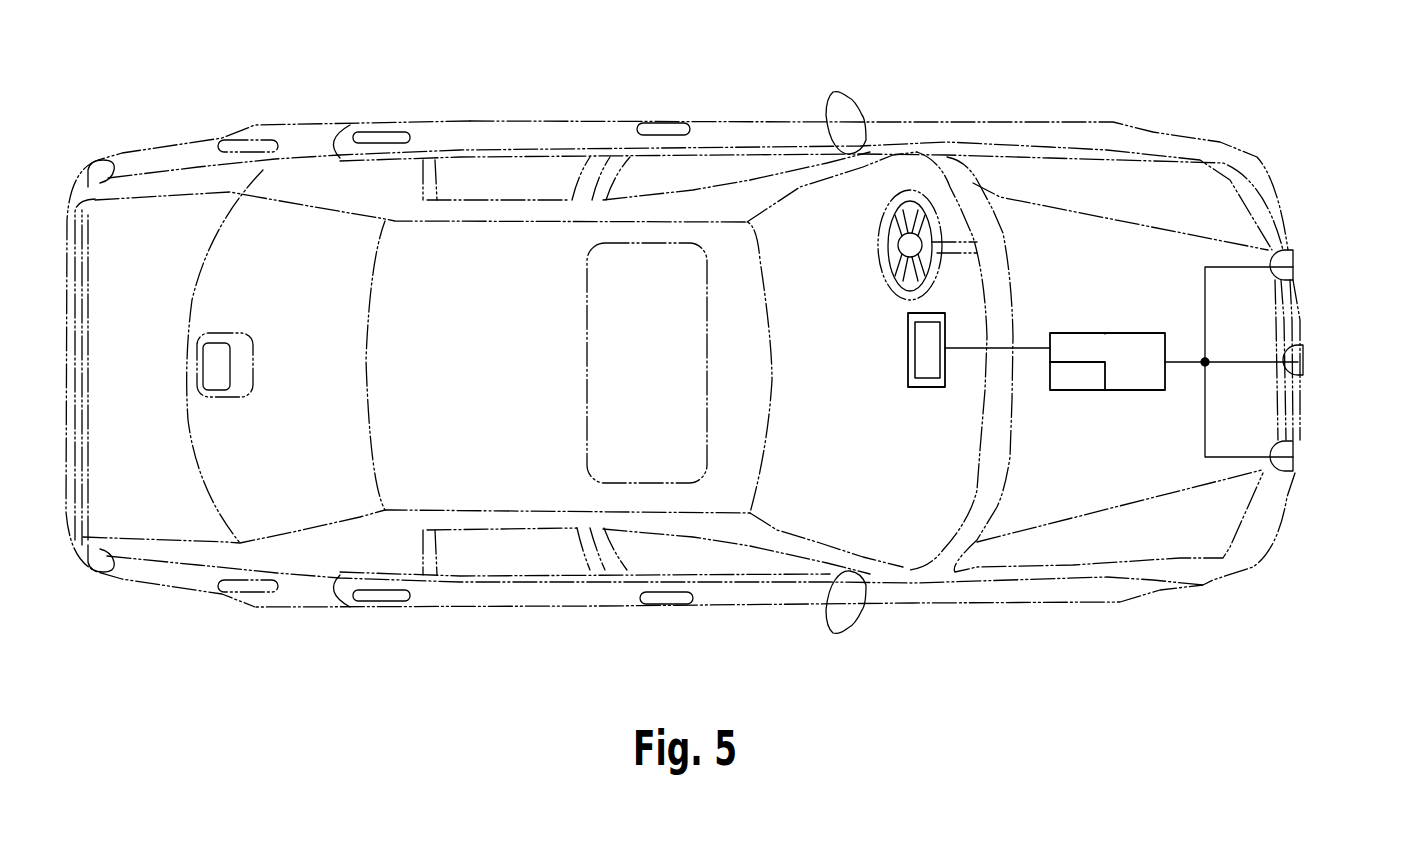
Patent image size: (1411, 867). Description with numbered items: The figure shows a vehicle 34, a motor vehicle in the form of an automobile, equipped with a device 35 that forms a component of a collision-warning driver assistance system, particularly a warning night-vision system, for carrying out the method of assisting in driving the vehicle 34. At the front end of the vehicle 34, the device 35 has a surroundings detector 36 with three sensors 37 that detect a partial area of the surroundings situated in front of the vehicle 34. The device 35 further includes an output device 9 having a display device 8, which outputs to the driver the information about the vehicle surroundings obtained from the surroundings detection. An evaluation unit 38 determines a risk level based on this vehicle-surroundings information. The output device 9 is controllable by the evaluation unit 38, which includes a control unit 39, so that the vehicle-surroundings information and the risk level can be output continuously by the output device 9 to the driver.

The vehicle 34 is at (729, 325).
The surroundings detector 36 is at (1278, 318).
The sensors 37 is at (1293, 270).
The output device 9 is at (884, 395).
The display device 8 is at (928, 395).
The device 35 is at (1111, 420).
The evaluation unit 38 is at (1140, 367).
The control unit 39 is at (1077, 373).